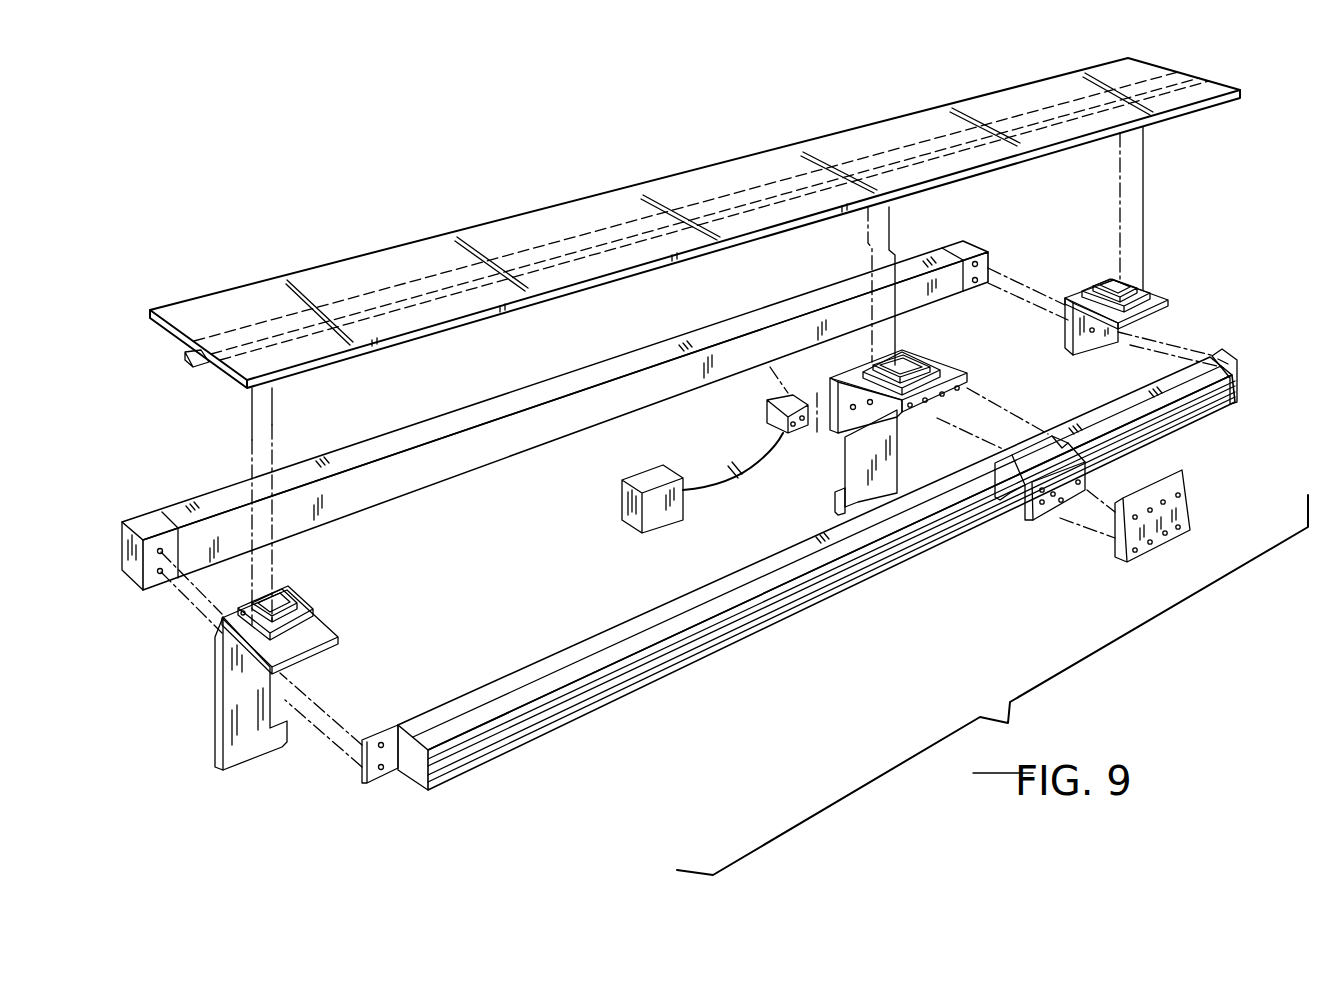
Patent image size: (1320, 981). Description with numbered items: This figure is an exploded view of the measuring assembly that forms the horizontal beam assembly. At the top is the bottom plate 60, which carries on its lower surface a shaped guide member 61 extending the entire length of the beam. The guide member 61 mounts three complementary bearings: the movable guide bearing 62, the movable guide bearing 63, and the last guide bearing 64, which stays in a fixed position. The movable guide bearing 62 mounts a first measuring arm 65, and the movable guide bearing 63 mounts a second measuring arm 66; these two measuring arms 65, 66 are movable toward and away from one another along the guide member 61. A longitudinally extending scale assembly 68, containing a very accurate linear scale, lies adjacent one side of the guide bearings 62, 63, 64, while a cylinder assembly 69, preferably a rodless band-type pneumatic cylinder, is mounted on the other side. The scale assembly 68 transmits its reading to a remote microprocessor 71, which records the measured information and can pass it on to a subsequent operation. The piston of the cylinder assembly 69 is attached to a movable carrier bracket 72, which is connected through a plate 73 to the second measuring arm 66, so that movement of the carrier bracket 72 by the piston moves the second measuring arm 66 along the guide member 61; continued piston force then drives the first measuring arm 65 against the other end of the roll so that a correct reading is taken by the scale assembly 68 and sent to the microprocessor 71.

The bottom plate 60 is at (607, 200).
The guide member 61 is at (190, 372).
The movable guide bearing 62 is at (300, 602).
The movable guide bearing 63 is at (915, 365).
The guide bearing 64 is at (1147, 287).
The first measuring arm 65 is at (257, 765).
The second measuring arm 66 is at (898, 456).
The scale assembly 68 is at (476, 474).
The cylinder assembly 69 is at (641, 612).
The microprocessor 71 is at (620, 522).
The carrier bracket 72 is at (1049, 520).
The plate 73 is at (1130, 565).